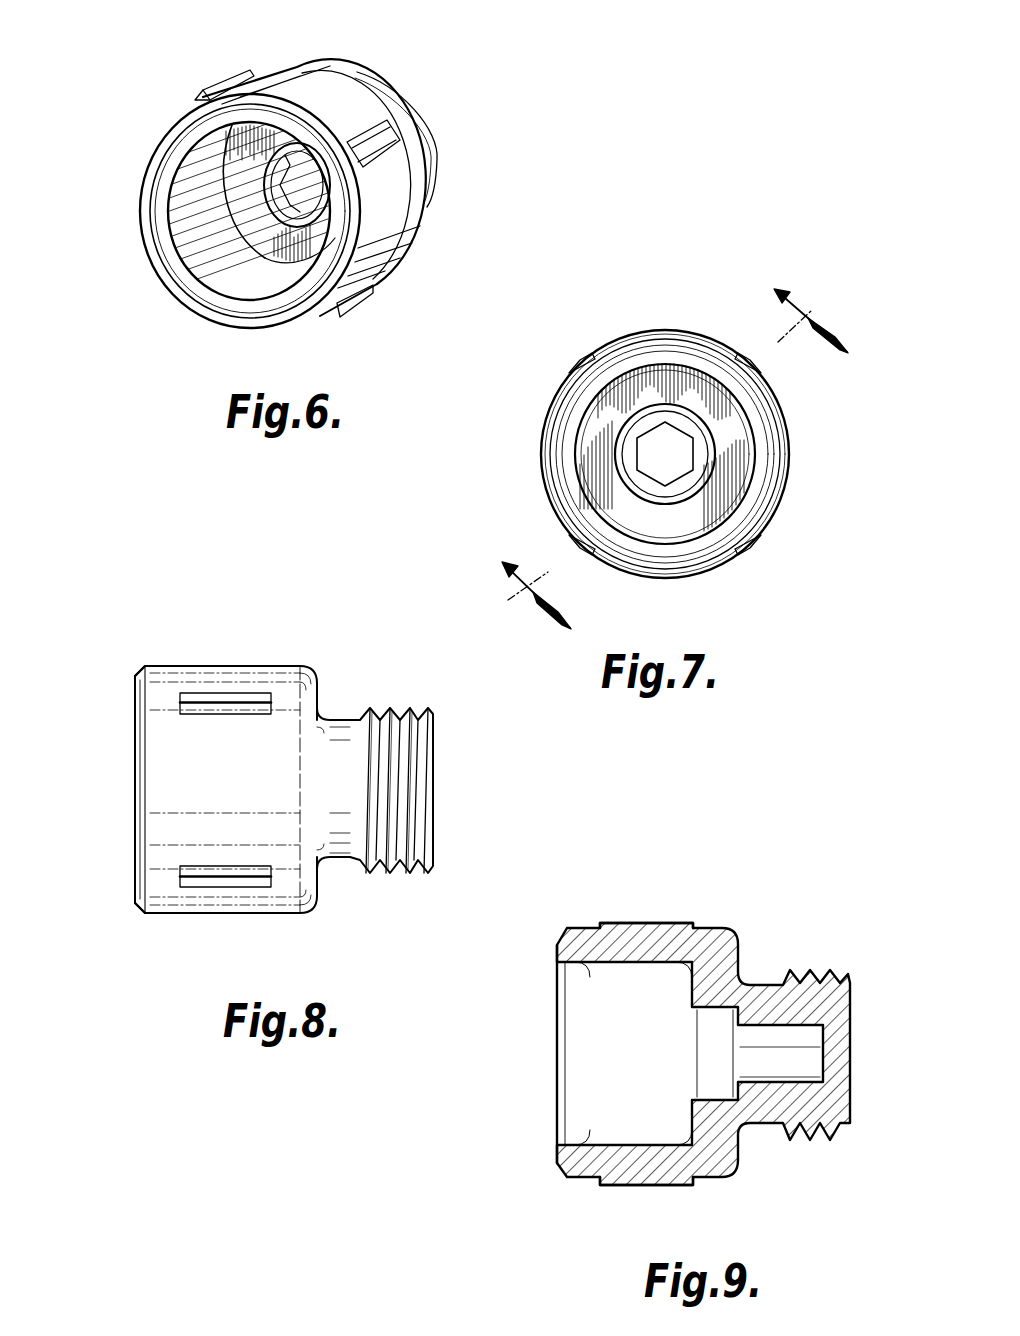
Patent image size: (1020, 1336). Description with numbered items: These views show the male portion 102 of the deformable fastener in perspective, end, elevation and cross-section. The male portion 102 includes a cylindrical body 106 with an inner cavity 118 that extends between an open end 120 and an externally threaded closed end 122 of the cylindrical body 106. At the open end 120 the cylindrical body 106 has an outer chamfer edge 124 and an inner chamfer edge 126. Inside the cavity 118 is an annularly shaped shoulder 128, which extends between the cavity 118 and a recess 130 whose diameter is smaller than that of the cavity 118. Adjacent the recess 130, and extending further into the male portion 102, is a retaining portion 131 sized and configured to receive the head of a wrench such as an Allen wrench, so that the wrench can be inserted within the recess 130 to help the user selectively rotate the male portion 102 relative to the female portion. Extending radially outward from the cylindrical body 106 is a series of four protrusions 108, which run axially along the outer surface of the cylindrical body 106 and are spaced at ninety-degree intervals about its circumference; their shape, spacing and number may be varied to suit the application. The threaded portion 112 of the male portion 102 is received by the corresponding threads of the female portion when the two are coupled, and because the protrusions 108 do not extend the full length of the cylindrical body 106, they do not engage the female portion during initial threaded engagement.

In FIG. 6, the male portion 102 is at (462, 66).
In FIG. 7, the male portion 102 is at (673, 296).
In FIG. 8, the male portion 102 is at (160, 632).
In FIG. 9, the male portion 102 is at (772, 1192).
In FIG. 6, the cylindrical body 106 is at (318, 88).
In FIG. 7, the cylindrical body 106 is at (598, 352).
In FIG. 8, the cylindrical body 106 is at (200, 902).
In FIG. 9, the cylindrical body 106 is at (640, 1186).
In FIG. 6, the protrusions 108 is at (223, 88).
In FIG. 7, the protrusions 108 is at (765, 526).
In FIG. 8, the protrusions 108 is at (232, 697).
In FIG. 9, the protrusions 108 is at (646, 1054).
In FIG. 6, the threaded portion 112 is at (440, 150).
In FIG. 8, the threaded portion 112 is at (425, 710).
In FIG. 6, the inner cavity 118 is at (247, 278).
In FIG. 7, the inner cavity 118 is at (740, 500).
In FIG. 9, the inner cavity 118 is at (588, 980).
In FIG. 6, the open end 120 is at (258, 300).
In FIG. 8, the open end 120 is at (126, 860).
In FIG. 9, the open end 120 is at (546, 1113).
In FIG. 6, the externally threaded closed end 122 is at (240, 208).
In FIG. 7, the externally threaded closed end 122 is at (597, 452).
In FIG. 8, the externally threaded closed end 122 is at (315, 880).
In FIG. 9, the externally threaded closed end 122 is at (828, 1065).
In FIG. 6, the outer chamfer edge 124 is at (158, 145).
In FIG. 7, the outer chamfer edge 124 is at (545, 512).
In FIG. 8, the outer chamfer edge 124 is at (135, 706).
In FIG. 9, the outer chamfer edge 124 is at (557, 1170).
In FIG. 6, the inner chamfer edge 126 is at (160, 196).
In FIG. 7, the inner chamfer edge 126 is at (683, 548).
In FIG. 9, the inner chamfer edge 126 is at (557, 1162).
In FIG. 6, the shoulder 128 is at (302, 230).
In FIG. 7, the shoulder 128 is at (705, 440).
In FIG. 9, the shoulder 128 is at (690, 1010).
In FIG. 6, the recess 130 is at (243, 280).
In FIG. 7, the recess 130 is at (700, 455).
In FIG. 9, the recess 130 is at (735, 1010).
In FIG. 9, the retaining portion 131 is at (790, 1030).